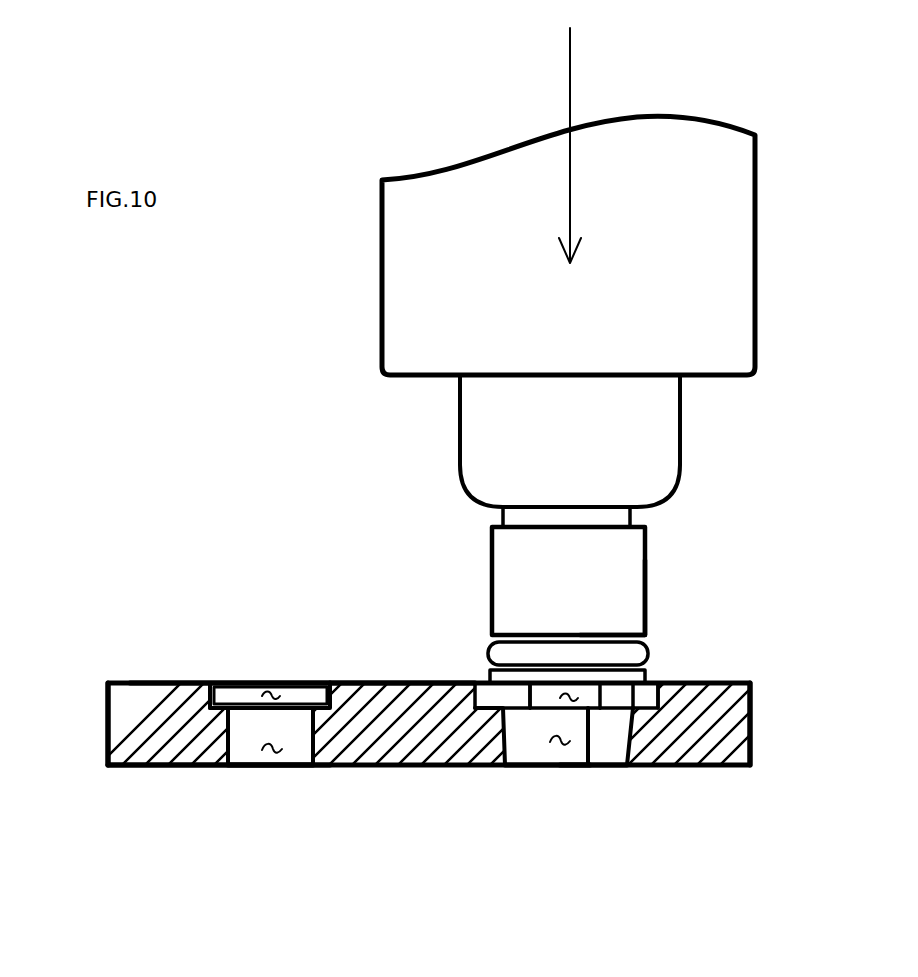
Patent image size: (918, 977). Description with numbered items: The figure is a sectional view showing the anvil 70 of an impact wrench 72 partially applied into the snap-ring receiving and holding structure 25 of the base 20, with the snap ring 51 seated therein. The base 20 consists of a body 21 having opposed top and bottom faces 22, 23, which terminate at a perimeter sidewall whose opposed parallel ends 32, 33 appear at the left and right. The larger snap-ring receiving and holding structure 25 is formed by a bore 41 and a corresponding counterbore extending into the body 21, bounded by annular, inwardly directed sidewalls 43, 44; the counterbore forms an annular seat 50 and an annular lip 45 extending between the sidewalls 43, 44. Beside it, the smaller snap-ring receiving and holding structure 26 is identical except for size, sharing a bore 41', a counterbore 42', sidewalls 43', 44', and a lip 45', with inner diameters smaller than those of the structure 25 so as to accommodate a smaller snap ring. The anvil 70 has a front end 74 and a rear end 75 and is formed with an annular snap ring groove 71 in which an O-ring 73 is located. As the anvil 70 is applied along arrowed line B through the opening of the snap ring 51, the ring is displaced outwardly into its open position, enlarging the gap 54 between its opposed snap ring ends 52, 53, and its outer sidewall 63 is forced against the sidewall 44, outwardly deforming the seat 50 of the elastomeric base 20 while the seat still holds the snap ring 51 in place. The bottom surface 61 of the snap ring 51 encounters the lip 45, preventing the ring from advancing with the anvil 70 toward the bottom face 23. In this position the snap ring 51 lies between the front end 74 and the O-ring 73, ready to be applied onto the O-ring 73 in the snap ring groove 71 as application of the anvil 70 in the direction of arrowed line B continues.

The arrowed line B is at (572, 68).
The impact wrench 72 is at (713, 233).
The rear end 75 is at (637, 521).
The anvil 70 is at (492, 600).
The snap ring groove 71 is at (618, 632).
The O-ring 73 is at (632, 655).
The lip 45 is at (604, 661).
The base 20 is at (130, 683).
The top face 22 is at (170, 683).
The end 33 is at (108, 725).
The bottom face 23 is at (155, 765).
The end 32 is at (752, 705).
The body 21 is at (405, 735).
The counterbore 42' is at (274, 657).
The lip 45' is at (270, 661).
The sidewall 44' is at (223, 656).
The sidewall 43' is at (221, 792).
The bore 41' is at (270, 818).
The snap-ring receiving and holding structure 26 is at (290, 763).
The outer sidewall 63 is at (458, 686).
The snap ring 51 is at (480, 680).
The gap 54 is at (568, 700).
The snap ring end 52 is at (540, 702).
The snap ring end 53 is at (590, 702).
The bottom surface 61 is at (647, 765).
The seat 50 is at (640, 705).
The sidewall 44 is at (484, 760).
The sidewall 43 is at (500, 825).
The bore 41 is at (566, 819).
The snap-ring receiving and holding structure 25 is at (572, 768).
The front end 74 is at (585, 763).